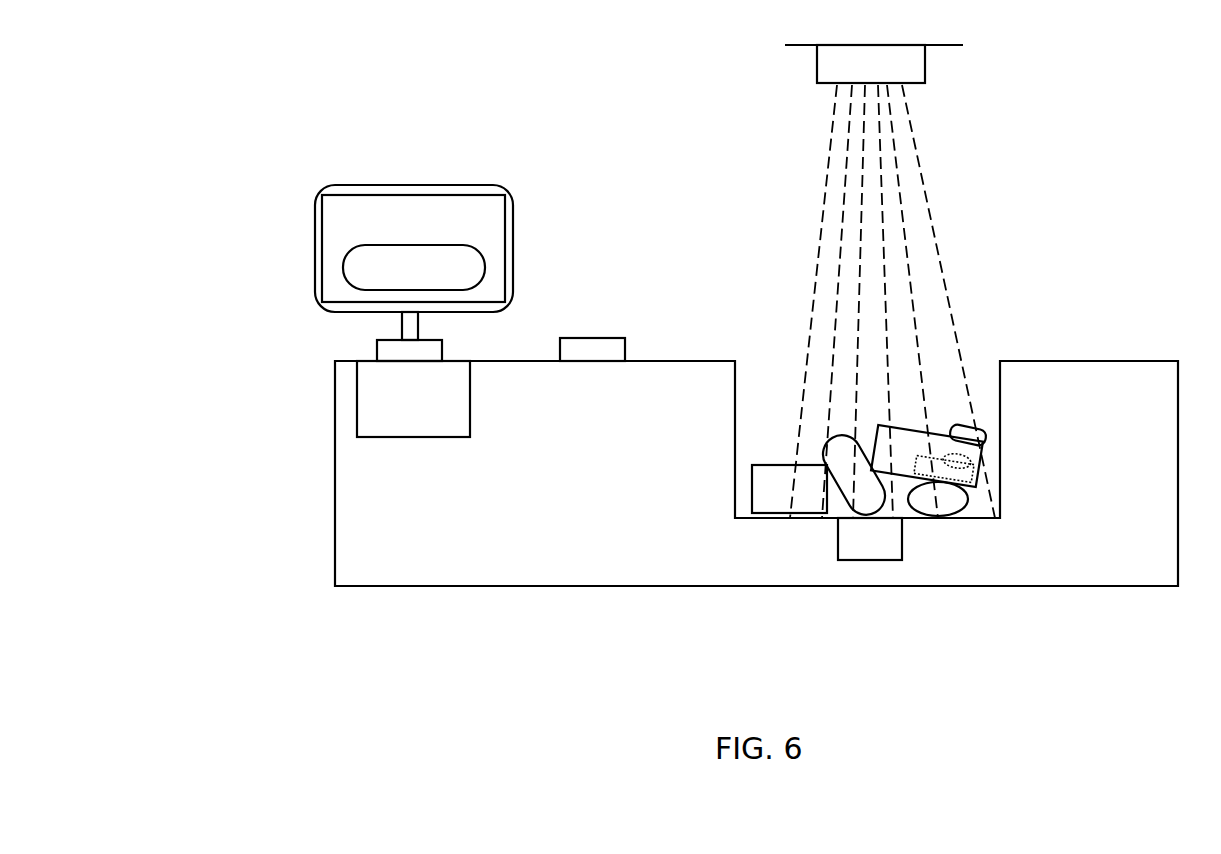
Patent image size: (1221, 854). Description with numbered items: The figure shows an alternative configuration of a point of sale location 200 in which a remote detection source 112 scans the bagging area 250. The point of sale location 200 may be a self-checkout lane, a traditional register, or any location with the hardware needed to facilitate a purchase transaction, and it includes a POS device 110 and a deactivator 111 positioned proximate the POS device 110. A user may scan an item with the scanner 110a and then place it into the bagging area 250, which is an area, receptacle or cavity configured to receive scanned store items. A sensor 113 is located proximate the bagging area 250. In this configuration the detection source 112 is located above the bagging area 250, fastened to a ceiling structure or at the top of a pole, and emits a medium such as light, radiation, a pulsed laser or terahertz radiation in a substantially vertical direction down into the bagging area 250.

The POS device 110 is at (368, 202).
The scanner 110a is at (383, 400).
The deactivator 111 is at (607, 347).
The detection source 112 is at (835, 65).
The sensor 113 is at (890, 542).
The point of sale location 200 is at (993, 142).
The bagging area 250 is at (885, 398).